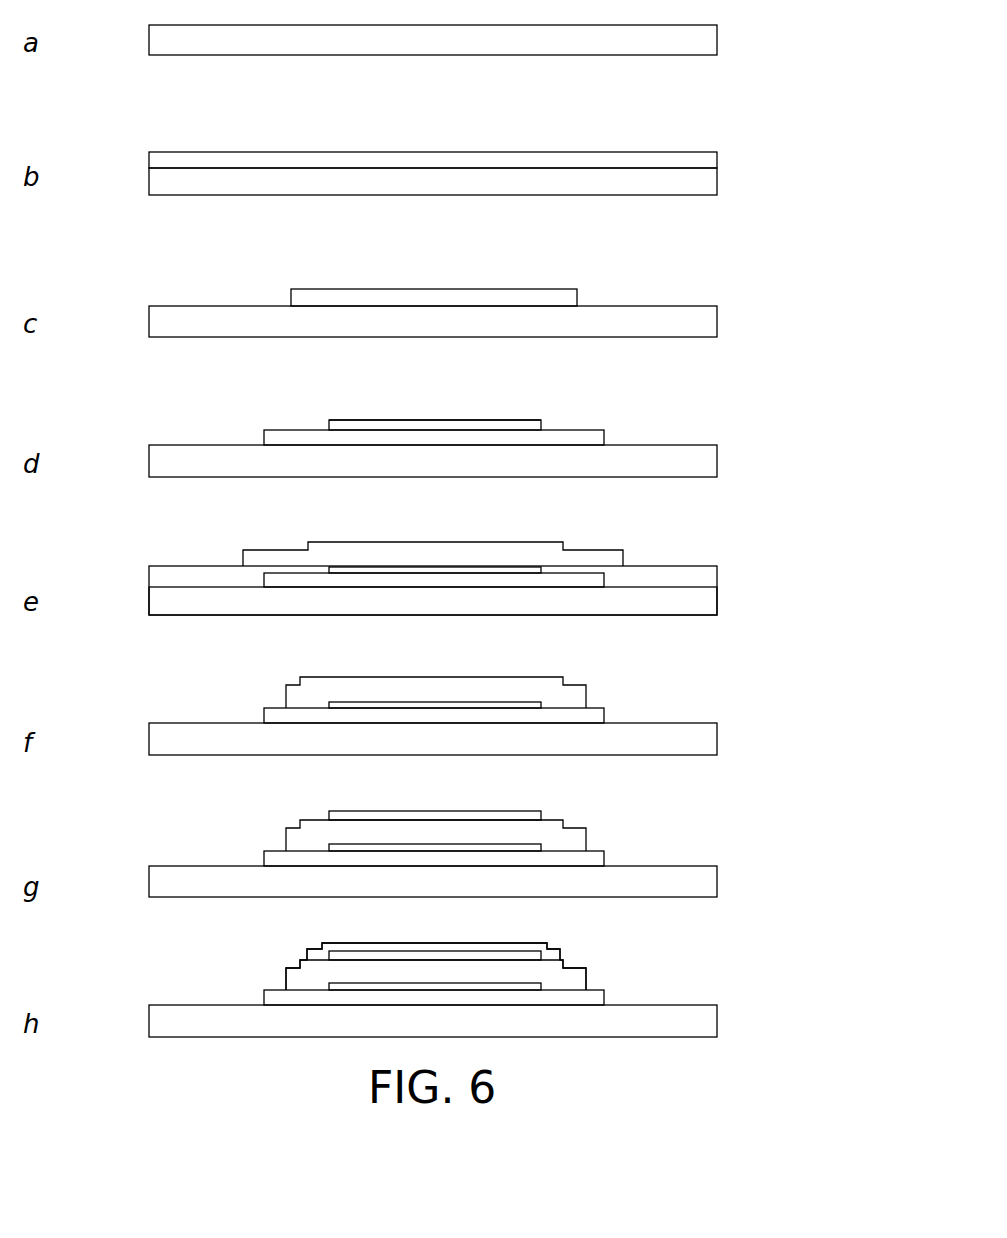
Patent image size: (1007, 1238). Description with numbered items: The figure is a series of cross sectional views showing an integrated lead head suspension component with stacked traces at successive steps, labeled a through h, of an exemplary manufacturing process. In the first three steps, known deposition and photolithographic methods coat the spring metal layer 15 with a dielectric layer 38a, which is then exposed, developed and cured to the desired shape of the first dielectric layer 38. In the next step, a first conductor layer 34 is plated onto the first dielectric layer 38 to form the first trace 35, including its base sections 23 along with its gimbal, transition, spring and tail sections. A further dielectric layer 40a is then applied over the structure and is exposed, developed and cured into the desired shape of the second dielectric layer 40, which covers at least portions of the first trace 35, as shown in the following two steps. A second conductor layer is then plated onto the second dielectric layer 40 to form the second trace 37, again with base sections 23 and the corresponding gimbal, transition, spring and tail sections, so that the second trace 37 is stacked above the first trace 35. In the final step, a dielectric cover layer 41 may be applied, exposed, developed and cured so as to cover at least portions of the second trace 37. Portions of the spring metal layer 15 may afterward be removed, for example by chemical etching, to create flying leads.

The spring metal layer 15 is at (717, 40).
The dielectric layer 38a is at (717, 152).
The first dielectric layer 38 is at (577, 296).
The first trace 35 is at (538, 422).
The first conductor layer 34 is at (357, 420).
The dielectric layer 40a is at (563, 550).
The second dielectric layer 40 is at (563, 680).
The second trace 37 is at (458, 810).
The dielectric cover layer 41 is at (317, 943).
The base section 23 is at (279, 958).